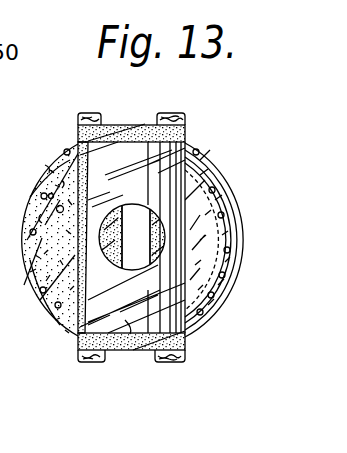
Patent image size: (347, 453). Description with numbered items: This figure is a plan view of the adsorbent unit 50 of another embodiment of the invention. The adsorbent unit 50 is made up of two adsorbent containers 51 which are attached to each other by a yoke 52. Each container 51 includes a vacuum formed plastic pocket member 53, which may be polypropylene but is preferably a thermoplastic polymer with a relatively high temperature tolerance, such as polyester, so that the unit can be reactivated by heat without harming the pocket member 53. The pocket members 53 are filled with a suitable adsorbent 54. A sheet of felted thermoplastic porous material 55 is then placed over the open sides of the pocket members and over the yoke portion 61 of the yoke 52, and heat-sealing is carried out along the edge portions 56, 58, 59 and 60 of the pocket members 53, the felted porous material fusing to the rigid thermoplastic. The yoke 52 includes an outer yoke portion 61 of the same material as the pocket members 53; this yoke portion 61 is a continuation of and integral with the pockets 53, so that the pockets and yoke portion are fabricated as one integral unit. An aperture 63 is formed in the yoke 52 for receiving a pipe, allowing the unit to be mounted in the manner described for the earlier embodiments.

The adsorbent unit 50 is at (222, 148).
The adsorbent container 51 is at (52, 150).
The yoke 52 is at (123, 127).
The pocket member 53 is at (45, 305).
The adsorbent 54 is at (45, 170).
The felted thermoplastic porous material 55 is at (145, 232).
The edge portion 56 is at (31, 305).
The edge portion 58 is at (90, 113).
The edge portion 59 is at (137, 127).
The edge portion 60 is at (176, 192).
The yoke portion 61 is at (122, 350).
The aperture 63 is at (133, 263).